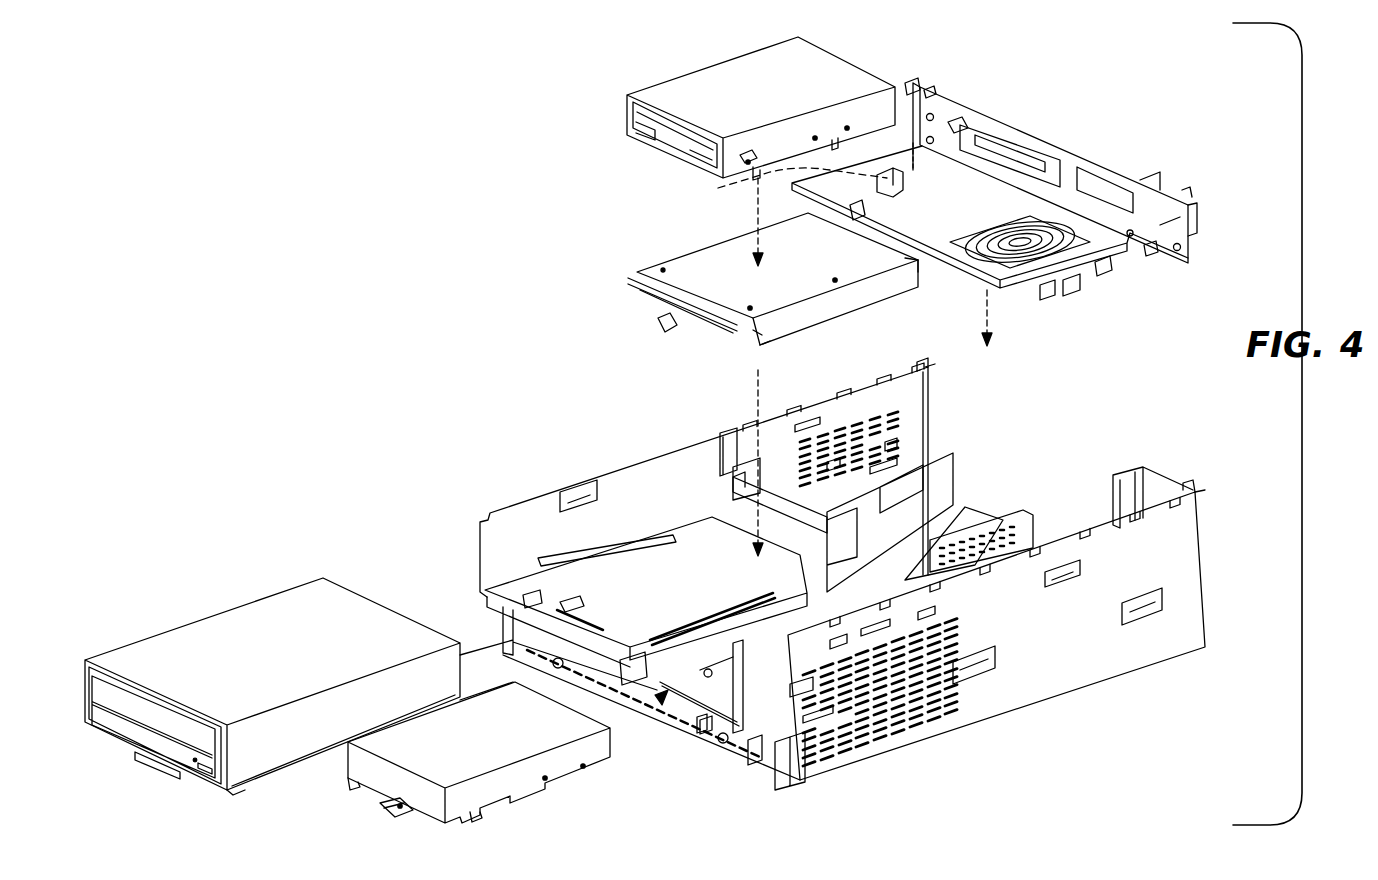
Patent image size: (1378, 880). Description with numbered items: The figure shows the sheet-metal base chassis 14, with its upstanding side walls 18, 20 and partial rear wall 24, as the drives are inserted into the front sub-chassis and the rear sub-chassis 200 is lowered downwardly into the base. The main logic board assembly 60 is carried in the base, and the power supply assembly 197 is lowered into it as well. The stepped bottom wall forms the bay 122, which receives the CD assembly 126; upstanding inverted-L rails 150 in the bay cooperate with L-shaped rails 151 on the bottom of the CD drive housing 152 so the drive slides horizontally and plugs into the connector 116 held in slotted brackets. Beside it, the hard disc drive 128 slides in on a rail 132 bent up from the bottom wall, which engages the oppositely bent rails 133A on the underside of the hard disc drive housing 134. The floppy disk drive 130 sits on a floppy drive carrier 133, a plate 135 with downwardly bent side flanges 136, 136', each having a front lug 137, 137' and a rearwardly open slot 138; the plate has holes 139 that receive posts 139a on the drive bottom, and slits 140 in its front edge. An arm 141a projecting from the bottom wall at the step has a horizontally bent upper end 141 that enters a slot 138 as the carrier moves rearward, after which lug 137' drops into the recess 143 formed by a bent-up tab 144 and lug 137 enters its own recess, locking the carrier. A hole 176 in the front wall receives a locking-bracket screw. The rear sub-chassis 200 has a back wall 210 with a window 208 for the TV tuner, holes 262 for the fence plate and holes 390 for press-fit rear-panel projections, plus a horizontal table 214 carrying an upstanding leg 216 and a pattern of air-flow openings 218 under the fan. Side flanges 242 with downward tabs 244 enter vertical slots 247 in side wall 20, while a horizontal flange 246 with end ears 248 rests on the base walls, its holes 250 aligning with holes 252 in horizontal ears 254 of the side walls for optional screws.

The base chassis 14 is at (508, 498).
The side wall 18 is at (1057, 687).
The side wall 20 is at (657, 460).
The rear wall 24 is at (1148, 480).
The main logic board assembly 60 is at (749, 733).
The connector 116 is at (733, 470).
The bay 122 is at (617, 490).
The CD assembly 126 is at (200, 622).
The hard disc drive 128 is at (532, 802).
The floppy disk drive 130 is at (690, 77).
The rail 132 is at (712, 672).
The floppy drive carrier 133 is at (650, 260).
The rails 133A is at (350, 788).
The hard disc drive housing 134 is at (433, 800).
The plate 135 is at (687, 262).
The side flange 136 is at (835, 317).
The side flange 136' is at (642, 304).
The lug 137 is at (729, 359).
The lug 137' is at (643, 315).
The slot 138 is at (905, 268).
The holes 139 is at (748, 244).
The posts 139a is at (775, 160).
The slits 140 is at (707, 312).
The upper end 141 is at (907, 525).
The arm 141a is at (965, 510).
The recess 143 is at (583, 610).
The tab 144 is at (678, 700).
The rails 150 is at (545, 577).
The rails 151 is at (233, 792).
The CD drive housing 152 is at (370, 603).
The hole 176 is at (703, 735).
The power supply assembly 197 is at (1035, 512).
The rear sub-chassis 200 is at (1010, 120).
The window 208 is at (1027, 153).
The back wall 210 is at (1170, 233).
The table 214 is at (978, 227).
The leg 216 is at (908, 176).
The air-flow openings 218 is at (1080, 292).
The side flanges 242 is at (1135, 312).
The tabs 244 is at (856, 218).
The horizontal flange 246 is at (1147, 190).
The vertical slots 247 is at (893, 443).
The ear 248 is at (912, 86).
The holes 250 is at (928, 88).
The holes 252 is at (928, 366).
The horizontal ears 254 is at (930, 360).
The holes 262 is at (950, 125).
The holes 390 is at (930, 118).